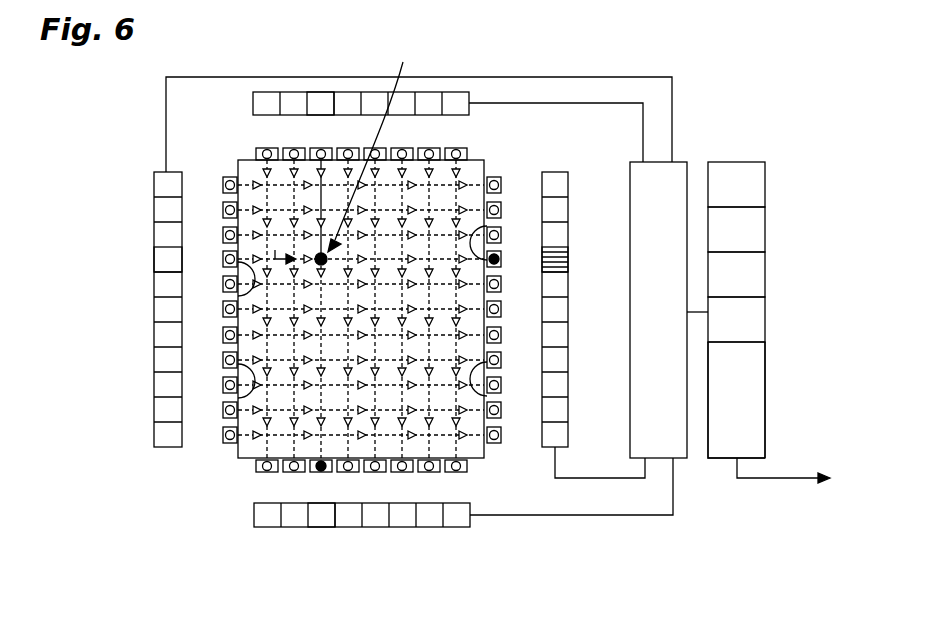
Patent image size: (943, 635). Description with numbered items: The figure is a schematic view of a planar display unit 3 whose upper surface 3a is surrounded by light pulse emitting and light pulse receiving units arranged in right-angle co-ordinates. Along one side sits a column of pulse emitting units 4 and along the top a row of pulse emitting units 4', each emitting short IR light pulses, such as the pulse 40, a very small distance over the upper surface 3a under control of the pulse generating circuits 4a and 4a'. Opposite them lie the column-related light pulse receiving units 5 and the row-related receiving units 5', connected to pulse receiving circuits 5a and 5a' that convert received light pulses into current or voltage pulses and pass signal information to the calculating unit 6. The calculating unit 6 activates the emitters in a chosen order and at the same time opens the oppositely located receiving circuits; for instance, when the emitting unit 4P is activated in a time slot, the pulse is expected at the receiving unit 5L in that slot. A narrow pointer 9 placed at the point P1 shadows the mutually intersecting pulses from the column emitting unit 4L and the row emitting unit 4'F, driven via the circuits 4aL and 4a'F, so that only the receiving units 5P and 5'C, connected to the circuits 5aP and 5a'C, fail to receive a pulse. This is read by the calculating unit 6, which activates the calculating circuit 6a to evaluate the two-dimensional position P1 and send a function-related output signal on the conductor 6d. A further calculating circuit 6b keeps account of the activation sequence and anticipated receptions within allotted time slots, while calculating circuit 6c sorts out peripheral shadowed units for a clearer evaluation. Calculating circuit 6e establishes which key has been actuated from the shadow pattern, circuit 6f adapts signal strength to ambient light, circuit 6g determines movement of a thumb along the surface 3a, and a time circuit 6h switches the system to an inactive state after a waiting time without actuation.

The display unit 3 is at (185, 472).
The upper surface of the display unit 3a is at (404, 360).
The column-related light pulse emitting units 4 is at (214, 296).
The row-related light pulse emitting units 4' is at (382, 140).
The row-related light pulse emitting unit F 4'F is at (279, 100).
The column pulse generating circuit 4a is at (134, 331).
The row pulse generating circuit 4a' is at (284, 100).
The pulse generating circuit for unit 4'F 4a'F is at (339, 65).
The pulse generating circuit for unit 4L 4aL is at (167, 265).
The column-related light pulse emitting unit L 4L is at (243, 287).
The light pulse emitting unit P 4P is at (240, 392).
The IR light pulse 40 is at (275, 250).
The pointer 9 is at (370, 145).
The point P1 is at (327, 256).
The column-related light pulse receiving units 5 is at (526, 289).
The row-related light pulse receiving units 5' is at (322, 495).
The row-related light pulse receiving unit C 5'C is at (377, 512).
The column-related light pulse receiving unit P 5P is at (490, 226).
The light pulse receiving unit L 5L is at (486, 396).
The column pulse receiving circuit 5a is at (563, 368).
The row pulse receiving circuit 5a' is at (329, 536).
The pulse receiving circuit for unit 5'C 5a'C is at (287, 542).
The pulse receiving circuit for unit 5P 5aP is at (563, 262).
The calculating unit 6 is at (678, 162).
The calculating circuit 6a is at (756, 184).
The calculating circuit 6b is at (757, 229).
The calculating circuit 6c is at (756, 274).
The conductor 6d is at (783, 467).
The calculating circuit 6e is at (757, 319).
The calculating circuit 6f is at (754, 400).
The calculating circuit 6g is at (757, 400).
The time circuit 6h is at (785, 400).